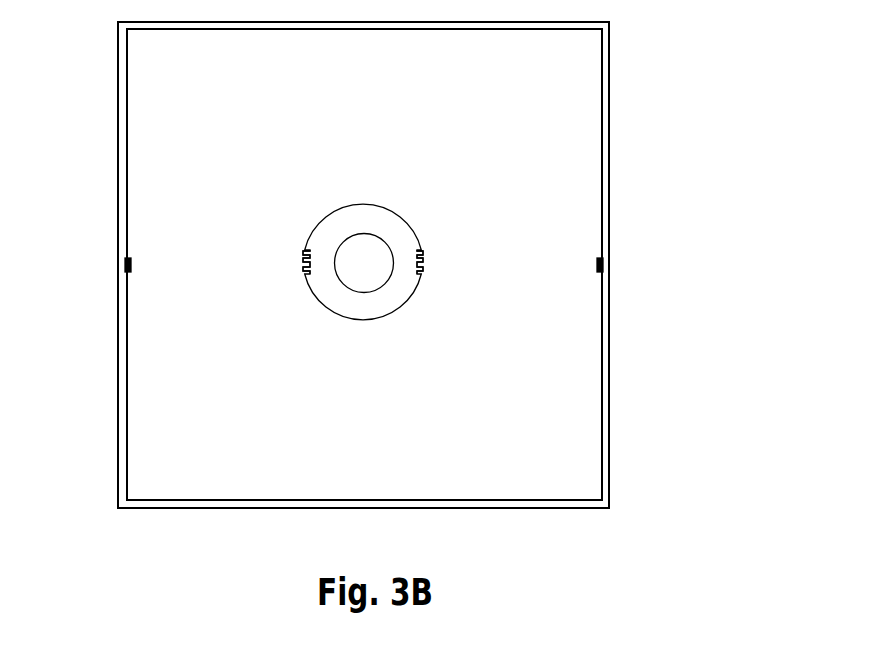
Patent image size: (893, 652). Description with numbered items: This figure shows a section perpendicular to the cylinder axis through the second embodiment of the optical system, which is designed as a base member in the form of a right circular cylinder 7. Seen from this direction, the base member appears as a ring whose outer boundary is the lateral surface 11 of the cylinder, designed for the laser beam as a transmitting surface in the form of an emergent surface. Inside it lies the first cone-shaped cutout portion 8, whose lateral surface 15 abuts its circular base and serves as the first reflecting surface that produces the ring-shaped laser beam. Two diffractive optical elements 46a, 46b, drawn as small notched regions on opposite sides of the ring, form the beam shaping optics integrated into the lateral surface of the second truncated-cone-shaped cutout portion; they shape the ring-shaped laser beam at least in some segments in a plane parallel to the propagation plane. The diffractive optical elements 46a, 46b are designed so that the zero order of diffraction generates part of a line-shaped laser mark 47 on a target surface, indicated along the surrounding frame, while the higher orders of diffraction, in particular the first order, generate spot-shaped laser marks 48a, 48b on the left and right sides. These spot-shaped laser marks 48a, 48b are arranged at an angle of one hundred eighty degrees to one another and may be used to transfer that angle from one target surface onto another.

The right circular cylinder 7 is at (403, 302).
The first cone-shaped cutout portion 8 is at (372, 276).
The lateral surface 11 is at (323, 218).
The lateral surface 15 is at (390, 249).
The diffractive optical element 46a is at (424, 266).
The diffractive optical element 46b is at (305, 269).
The line-shaped laser mark 47 is at (352, 498).
The spot-shaped laser mark 48a is at (602, 264).
The spot-shaped laser mark 48b is at (125, 265).